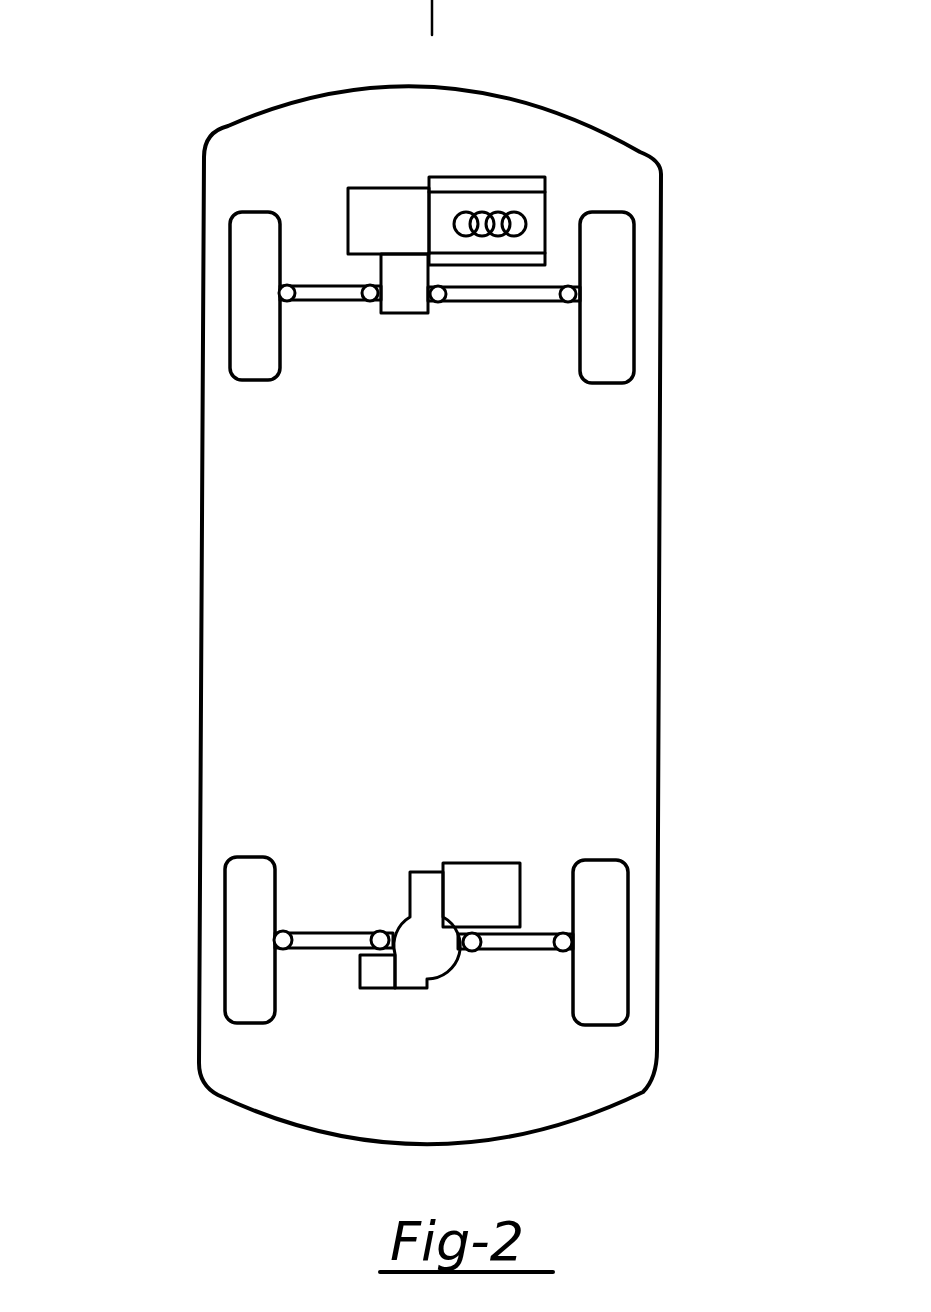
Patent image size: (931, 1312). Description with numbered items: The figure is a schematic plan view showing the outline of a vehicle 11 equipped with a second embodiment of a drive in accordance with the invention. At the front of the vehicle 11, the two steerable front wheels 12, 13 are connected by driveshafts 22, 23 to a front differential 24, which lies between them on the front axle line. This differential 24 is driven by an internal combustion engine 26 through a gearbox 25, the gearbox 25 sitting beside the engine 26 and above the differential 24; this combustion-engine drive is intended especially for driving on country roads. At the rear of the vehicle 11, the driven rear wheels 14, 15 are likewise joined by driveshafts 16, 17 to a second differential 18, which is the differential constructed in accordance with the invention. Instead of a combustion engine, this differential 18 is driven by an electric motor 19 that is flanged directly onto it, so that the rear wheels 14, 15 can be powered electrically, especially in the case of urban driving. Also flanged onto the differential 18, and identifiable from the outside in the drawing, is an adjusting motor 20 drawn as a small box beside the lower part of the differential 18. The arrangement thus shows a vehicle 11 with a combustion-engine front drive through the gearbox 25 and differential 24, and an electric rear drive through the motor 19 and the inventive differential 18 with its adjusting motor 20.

The vehicle 11 is at (662, 533).
The steerable front wheel 12 is at (248, 307).
The steerable front wheel 13 is at (612, 288).
The driven rear wheel 14 is at (247, 948).
The driven rear wheel 15 is at (598, 940).
The driveshaft 16 is at (347, 927).
The driveshaft 17 is at (537, 930).
The differential 18 is at (425, 947).
The electric motor 19 is at (482, 893).
The adjusting motor 20 is at (382, 970).
The driveshaft 22 is at (315, 292).
The driveshaft 23 is at (543, 293).
The differential 24 is at (395, 277).
The gearbox 25 is at (407, 218).
The internal combustion engine 26 is at (506, 188).